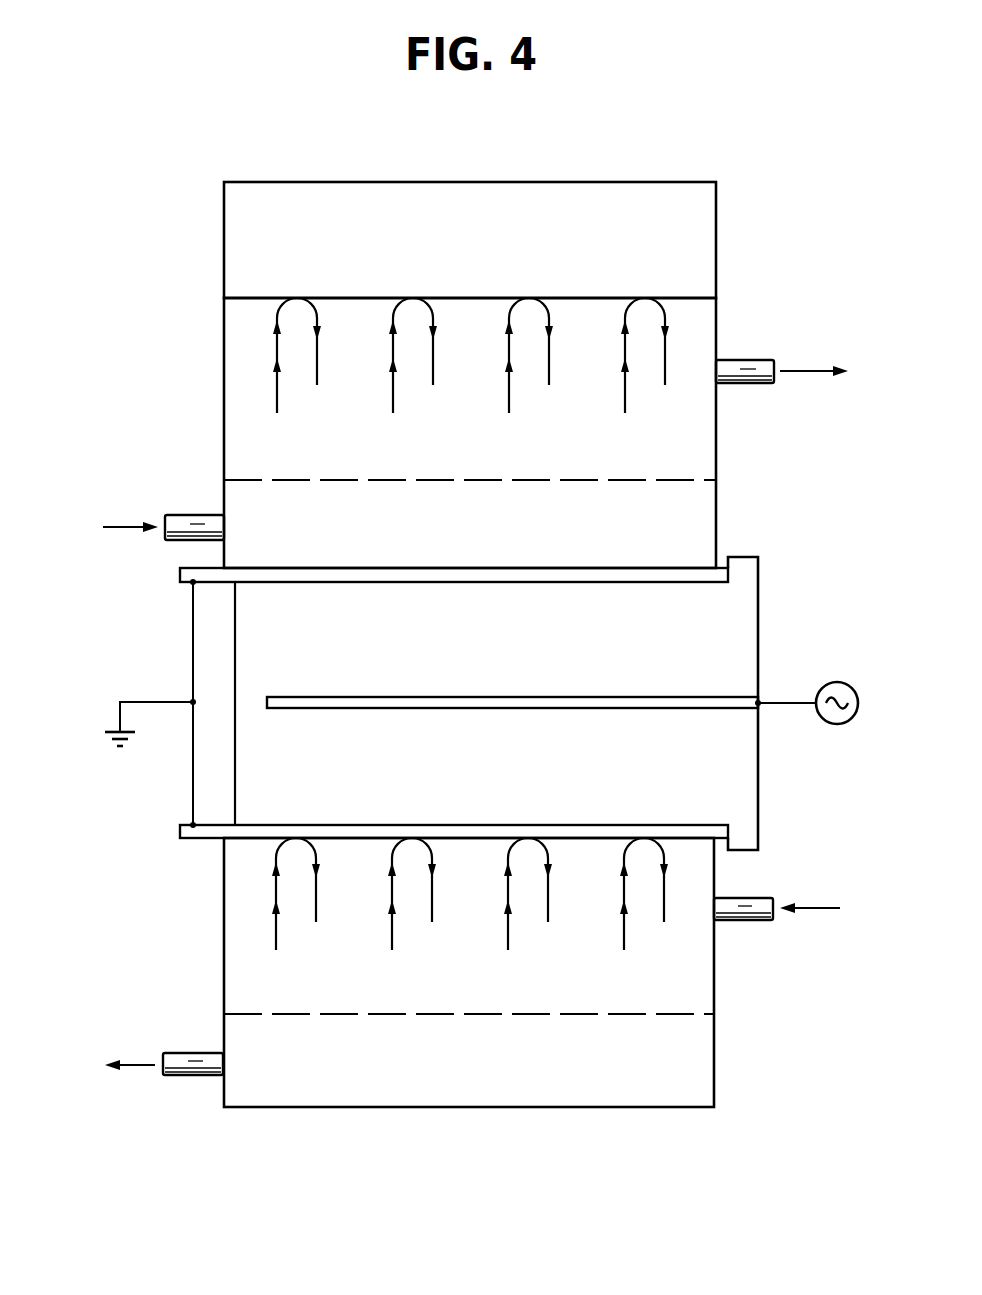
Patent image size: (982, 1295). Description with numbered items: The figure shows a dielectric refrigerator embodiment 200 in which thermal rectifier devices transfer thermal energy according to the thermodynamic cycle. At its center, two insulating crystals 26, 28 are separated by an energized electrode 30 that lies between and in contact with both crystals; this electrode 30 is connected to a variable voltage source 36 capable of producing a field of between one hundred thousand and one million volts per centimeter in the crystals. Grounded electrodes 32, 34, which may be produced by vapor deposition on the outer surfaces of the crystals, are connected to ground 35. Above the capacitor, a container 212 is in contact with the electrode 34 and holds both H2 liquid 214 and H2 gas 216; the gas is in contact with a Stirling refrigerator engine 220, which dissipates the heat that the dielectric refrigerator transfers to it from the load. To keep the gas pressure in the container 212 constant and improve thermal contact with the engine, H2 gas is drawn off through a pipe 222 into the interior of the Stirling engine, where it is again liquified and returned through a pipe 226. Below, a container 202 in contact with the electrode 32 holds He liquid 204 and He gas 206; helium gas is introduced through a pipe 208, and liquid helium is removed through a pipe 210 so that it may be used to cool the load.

The embodiment 200 is at (162, 172).
The Stirling refrigerator engine 220 is at (668, 141).
The container 212 is at (215, 334).
The H2 gas 216 is at (702, 437).
The H2 liquid 214 is at (702, 525).
The pipe 222 is at (752, 363).
The pipe 226 is at (187, 520).
The electrode 34 is at (180, 572).
The electrode 32 is at (180, 830).
The crystal 26 is at (737, 608).
The crystal 28 is at (733, 785).
The energized electrode 30 is at (720, 703).
The variable voltage source 36 is at (830, 678).
The ground connection 35 is at (120, 728).
The container 202 is at (724, 1049).
The He gas 206 is at (247, 922).
The He liquid 204 is at (238, 1033).
The pipe 208 is at (755, 921).
The pipe 210 is at (112, 1097).